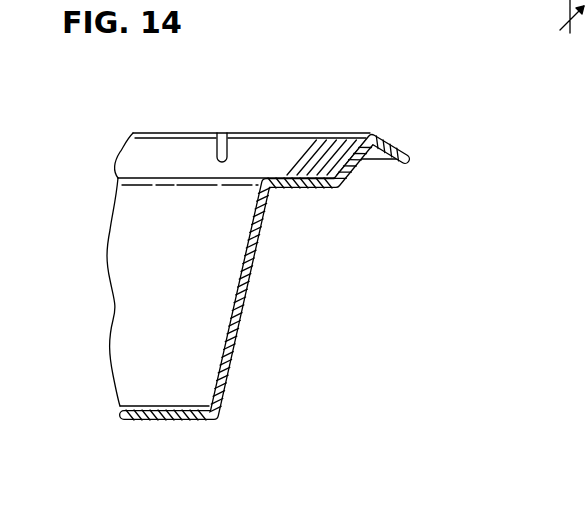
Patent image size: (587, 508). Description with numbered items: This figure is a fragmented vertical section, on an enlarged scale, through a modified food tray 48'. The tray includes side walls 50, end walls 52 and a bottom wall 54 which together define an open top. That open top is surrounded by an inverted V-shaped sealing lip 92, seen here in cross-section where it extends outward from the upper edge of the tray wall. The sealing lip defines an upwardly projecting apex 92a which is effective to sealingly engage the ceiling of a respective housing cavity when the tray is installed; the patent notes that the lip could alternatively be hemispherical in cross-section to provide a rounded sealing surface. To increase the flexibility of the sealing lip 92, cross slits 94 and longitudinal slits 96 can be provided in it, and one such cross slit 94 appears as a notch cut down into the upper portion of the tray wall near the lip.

The modified food tray 48' is at (241, 119).
The cross slits 94 is at (222, 131).
The end walls 52 is at (137, 300).
The side walls 50 is at (250, 285).
The bottom wall 54 is at (157, 423).
The inverted V-shaped sealing lip 92 is at (404, 153).
The apex 92a is at (377, 133).
The longitudinal slits 96 is at (457, 7).